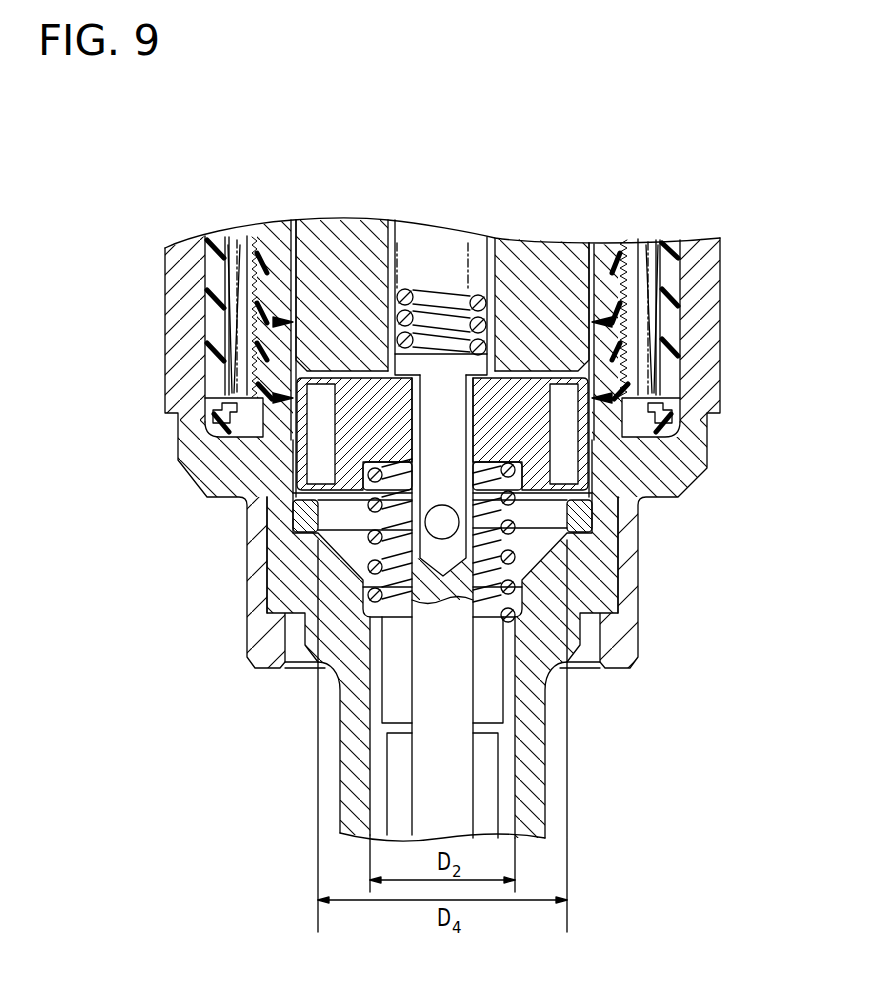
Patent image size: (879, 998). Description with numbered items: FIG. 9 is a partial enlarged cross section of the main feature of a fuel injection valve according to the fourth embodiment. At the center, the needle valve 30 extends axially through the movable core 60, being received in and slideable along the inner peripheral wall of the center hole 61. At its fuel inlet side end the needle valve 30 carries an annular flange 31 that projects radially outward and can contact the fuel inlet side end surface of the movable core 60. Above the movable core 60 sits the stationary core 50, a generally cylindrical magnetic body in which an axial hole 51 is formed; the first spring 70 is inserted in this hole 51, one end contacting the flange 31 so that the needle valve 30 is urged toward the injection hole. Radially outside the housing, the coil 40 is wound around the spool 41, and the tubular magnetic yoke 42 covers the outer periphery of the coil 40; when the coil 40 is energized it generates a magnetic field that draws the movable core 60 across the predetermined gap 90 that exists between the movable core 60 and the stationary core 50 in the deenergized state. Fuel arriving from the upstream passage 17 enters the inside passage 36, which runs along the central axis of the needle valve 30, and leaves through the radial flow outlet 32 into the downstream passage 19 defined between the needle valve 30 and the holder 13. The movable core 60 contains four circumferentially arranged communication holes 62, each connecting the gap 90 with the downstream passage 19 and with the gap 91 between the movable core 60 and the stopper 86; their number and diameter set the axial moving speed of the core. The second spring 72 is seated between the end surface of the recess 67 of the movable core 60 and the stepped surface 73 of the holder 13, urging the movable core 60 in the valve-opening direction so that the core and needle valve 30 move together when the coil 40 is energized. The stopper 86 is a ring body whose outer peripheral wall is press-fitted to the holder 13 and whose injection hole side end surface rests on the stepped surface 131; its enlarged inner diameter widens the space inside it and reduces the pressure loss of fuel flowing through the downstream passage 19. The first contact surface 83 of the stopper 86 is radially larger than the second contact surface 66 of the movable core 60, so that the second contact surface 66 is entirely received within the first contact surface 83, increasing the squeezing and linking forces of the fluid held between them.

The holder 13 is at (362, 756).
The upstream passage 17 is at (437, 250).
The downstream passage 19 is at (397, 802).
The needle valve 30 is at (443, 715).
The flange 31 is at (300, 340).
The flow outlet 32 is at (441, 525).
The inside passage 36 is at (585, 442).
The coil 40 is at (652, 270).
The spool 41 is at (663, 298).
The yoke 42 is at (698, 330).
The stationary core 50 is at (342, 270).
The hole 51 is at (470, 245).
The movable core 60 is at (395, 445).
The center hole 61 is at (600, 370).
The communication holes 62 is at (322, 420).
The second contact surface 66 is at (600, 508).
The recess 67 is at (575, 477).
The first spring 70 is at (403, 285).
The second spring 72 is at (367, 567).
The stepped surface 73 is at (363, 598).
The first contact surface 83 is at (600, 481).
The stopper 86 is at (307, 517).
The gap 90 is at (275, 373).
The gap 91 is at (262, 496).
The stepped surface 131 is at (598, 517).